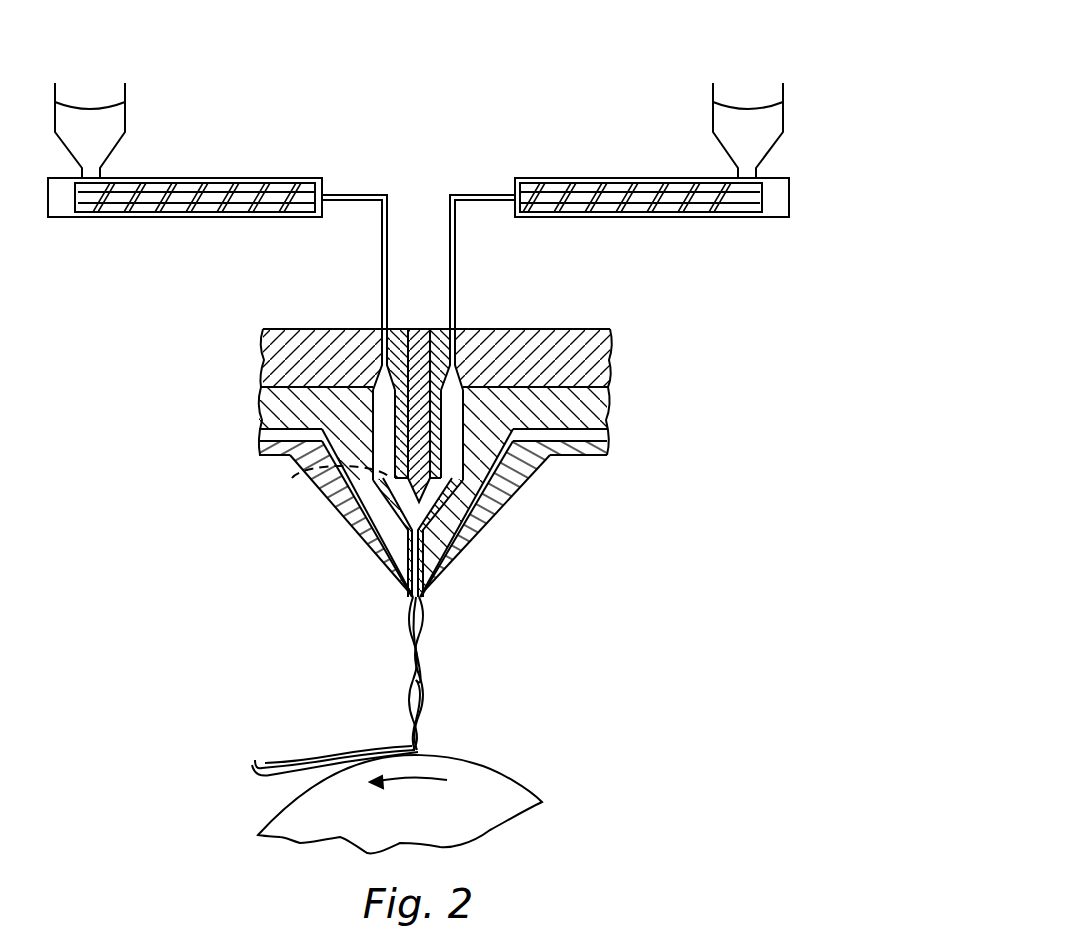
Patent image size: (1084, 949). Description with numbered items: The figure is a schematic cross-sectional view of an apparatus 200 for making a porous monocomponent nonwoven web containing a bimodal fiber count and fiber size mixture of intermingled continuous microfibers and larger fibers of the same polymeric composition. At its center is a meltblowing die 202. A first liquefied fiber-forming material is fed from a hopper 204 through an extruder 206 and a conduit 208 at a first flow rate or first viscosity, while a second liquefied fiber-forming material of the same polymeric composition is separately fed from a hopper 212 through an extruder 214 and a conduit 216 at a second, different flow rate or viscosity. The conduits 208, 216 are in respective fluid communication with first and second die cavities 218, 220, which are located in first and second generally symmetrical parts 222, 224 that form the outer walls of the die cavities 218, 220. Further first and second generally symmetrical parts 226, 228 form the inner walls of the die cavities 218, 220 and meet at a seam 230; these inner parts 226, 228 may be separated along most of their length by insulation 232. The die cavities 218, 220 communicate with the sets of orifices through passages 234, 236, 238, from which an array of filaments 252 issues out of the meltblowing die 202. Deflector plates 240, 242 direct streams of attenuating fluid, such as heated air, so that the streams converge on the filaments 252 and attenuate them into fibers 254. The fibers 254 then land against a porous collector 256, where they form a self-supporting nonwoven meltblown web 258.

The apparatus 200 is at (662, 44).
The meltblowing die 202 is at (645, 298).
The hopper 204 is at (113, 125).
The extruder 206 is at (190, 180).
The conduit 208 is at (333, 193).
The hopper 212 is at (723, 124).
The extruder 214 is at (647, 178).
The conduit 216 is at (505, 194).
The first die cavity 218 is at (377, 418).
The second die cavity 220 is at (460, 380).
The first generally symmetrical part 222 is at (275, 412).
The second generally symmetrical part 224 is at (588, 413).
The first generally symmetrical part 226 is at (395, 400).
The second generally symmetrical part 228 is at (455, 410).
The seam 230 is at (413, 498).
The insulation 232 is at (420, 353).
The passage 234 is at (300, 477).
The passage 236 is at (448, 528).
The passage 238 is at (407, 563).
The deflector plate 240 is at (362, 543).
The deflector plate 242 is at (447, 566).
The filaments 252 is at (407, 610).
The fibers 254 is at (408, 692).
The porous collector 256 is at (482, 777).
The nonwoven meltblown web 258 is at (273, 760).